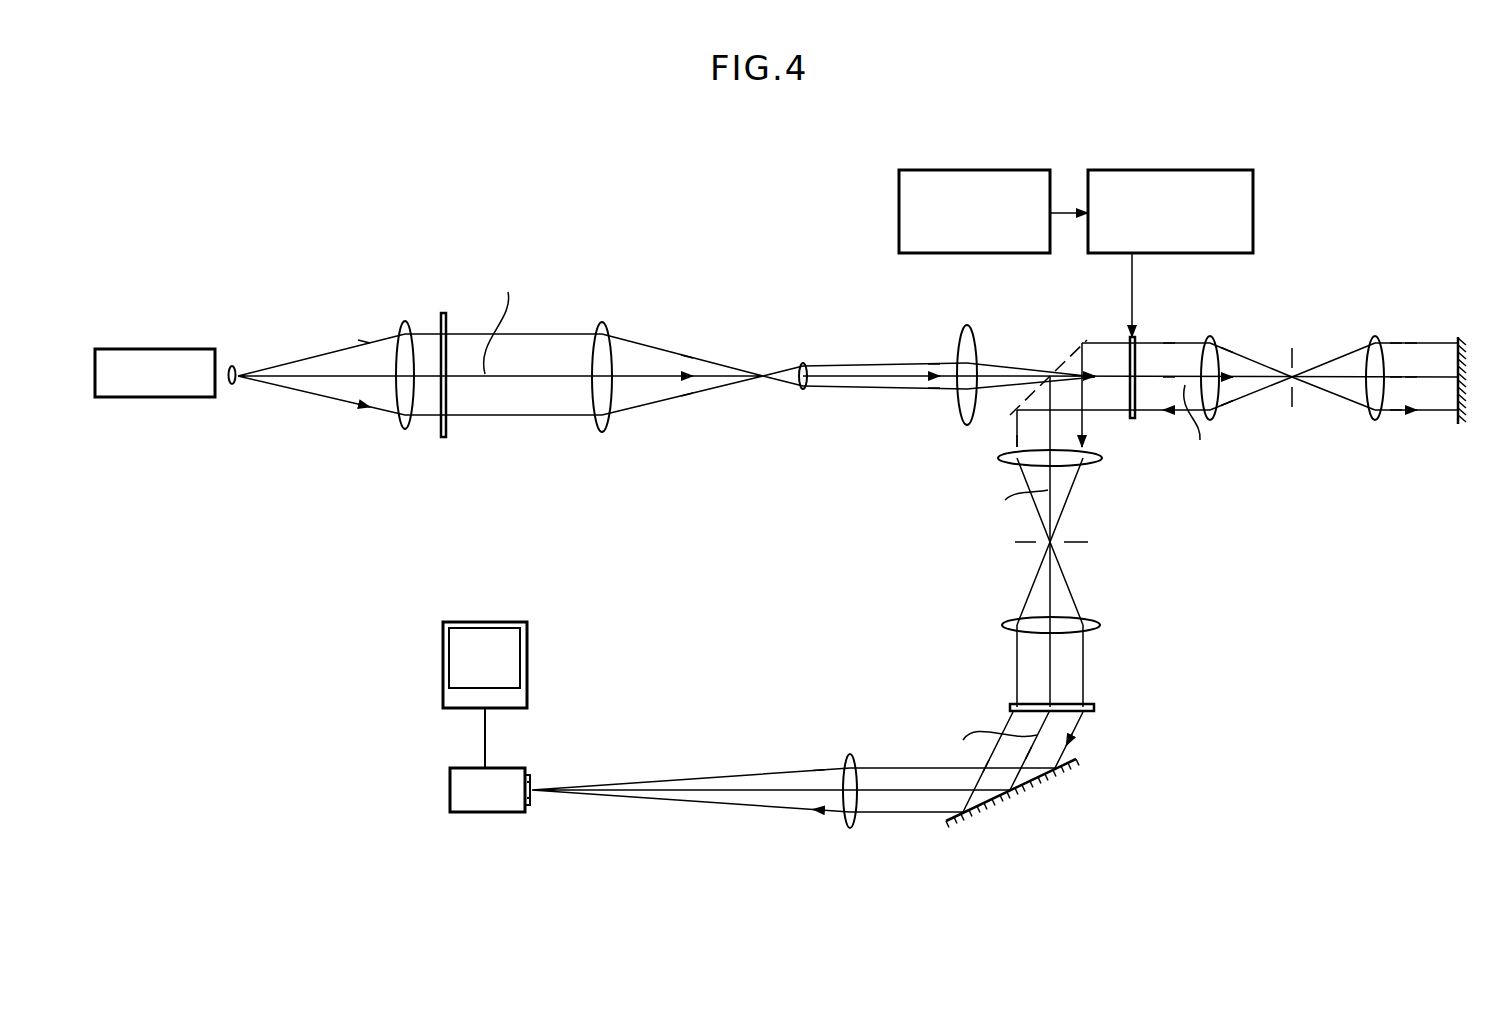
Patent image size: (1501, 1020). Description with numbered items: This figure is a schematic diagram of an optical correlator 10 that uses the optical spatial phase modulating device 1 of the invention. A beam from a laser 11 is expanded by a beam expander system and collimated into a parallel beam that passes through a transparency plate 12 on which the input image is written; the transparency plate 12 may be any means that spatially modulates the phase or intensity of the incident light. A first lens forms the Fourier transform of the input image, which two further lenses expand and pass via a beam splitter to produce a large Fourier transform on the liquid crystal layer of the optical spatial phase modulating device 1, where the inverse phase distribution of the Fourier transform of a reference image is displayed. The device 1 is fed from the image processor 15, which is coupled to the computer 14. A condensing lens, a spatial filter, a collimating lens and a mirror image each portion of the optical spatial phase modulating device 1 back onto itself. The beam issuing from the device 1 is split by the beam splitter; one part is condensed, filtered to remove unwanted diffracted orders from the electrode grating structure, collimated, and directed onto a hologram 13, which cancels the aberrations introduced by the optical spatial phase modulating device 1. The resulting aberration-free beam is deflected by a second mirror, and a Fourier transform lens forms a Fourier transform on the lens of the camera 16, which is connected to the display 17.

The optical spatial phase modulating device 1 is at (1135, 337).
The optical correlator 10 is at (757, 270).
The laser 11 is at (157, 349).
The transparency plate 12 is at (442, 316).
The hologram 13 is at (1010, 706).
The computer 14 is at (977, 170).
The image processor 15 is at (1170, 170).
The camera 16 is at (515, 768).
The display 17 is at (527, 633).